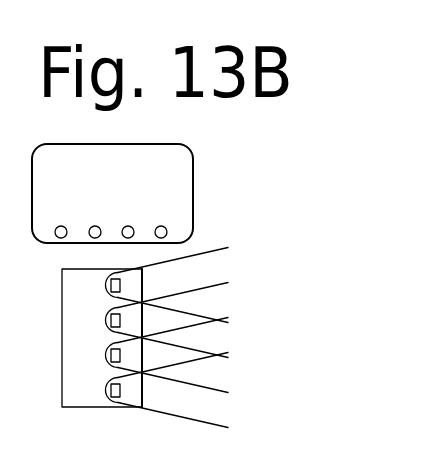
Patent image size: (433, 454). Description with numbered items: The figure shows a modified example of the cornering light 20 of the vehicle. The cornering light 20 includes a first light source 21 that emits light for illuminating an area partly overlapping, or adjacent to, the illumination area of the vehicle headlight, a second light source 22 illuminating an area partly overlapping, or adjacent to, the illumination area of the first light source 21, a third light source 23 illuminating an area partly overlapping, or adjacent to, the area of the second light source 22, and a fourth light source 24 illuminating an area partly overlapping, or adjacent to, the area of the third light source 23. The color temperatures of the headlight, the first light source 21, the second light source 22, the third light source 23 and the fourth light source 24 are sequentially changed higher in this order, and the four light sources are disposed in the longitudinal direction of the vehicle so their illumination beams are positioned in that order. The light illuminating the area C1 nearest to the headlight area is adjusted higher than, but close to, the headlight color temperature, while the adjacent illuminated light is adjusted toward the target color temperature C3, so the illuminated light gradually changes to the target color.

The cornering light 20 is at (207, 200).
The first light source 21 is at (155, 248).
The second light source 22 is at (130, 226).
The third light source 23 is at (97, 226).
The fourth light source 24 is at (155, 301).
The area nearest to the headlight illumination area C1 is at (218, 274).
The target color temperature C3 is at (218, 406).